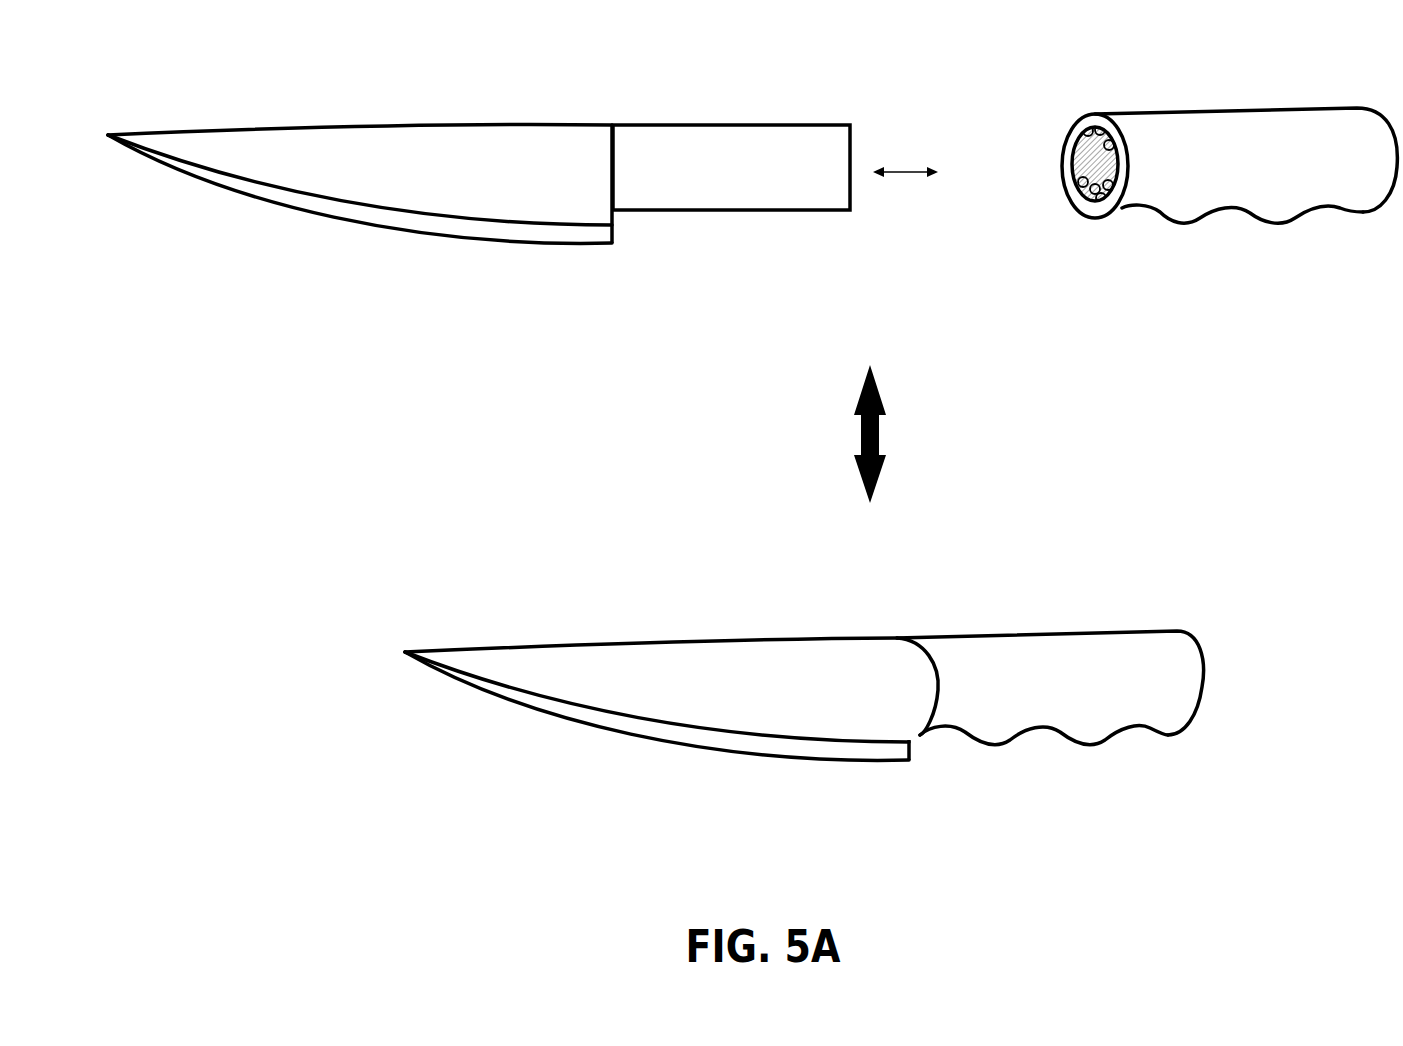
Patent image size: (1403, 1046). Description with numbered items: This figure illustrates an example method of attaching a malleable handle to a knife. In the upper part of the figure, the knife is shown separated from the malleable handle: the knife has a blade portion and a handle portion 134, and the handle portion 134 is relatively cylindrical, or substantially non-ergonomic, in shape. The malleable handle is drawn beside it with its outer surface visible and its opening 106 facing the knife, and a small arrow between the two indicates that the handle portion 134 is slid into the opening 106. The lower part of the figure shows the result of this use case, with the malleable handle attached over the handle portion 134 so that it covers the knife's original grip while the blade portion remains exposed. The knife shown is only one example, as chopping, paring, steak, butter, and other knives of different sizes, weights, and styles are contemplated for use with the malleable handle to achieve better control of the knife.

The opening 106 is at (1063, 130).
The handle portion 134 is at (714, 183).